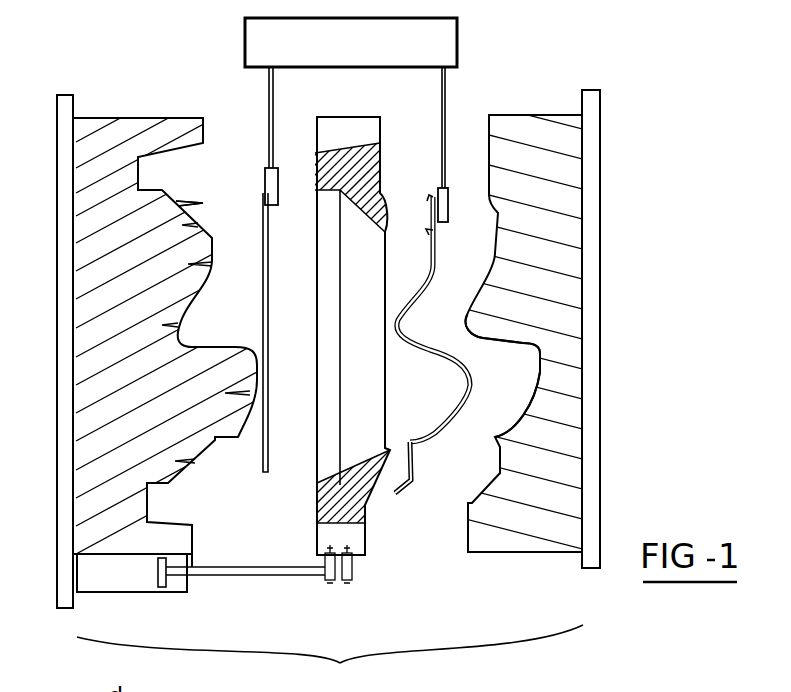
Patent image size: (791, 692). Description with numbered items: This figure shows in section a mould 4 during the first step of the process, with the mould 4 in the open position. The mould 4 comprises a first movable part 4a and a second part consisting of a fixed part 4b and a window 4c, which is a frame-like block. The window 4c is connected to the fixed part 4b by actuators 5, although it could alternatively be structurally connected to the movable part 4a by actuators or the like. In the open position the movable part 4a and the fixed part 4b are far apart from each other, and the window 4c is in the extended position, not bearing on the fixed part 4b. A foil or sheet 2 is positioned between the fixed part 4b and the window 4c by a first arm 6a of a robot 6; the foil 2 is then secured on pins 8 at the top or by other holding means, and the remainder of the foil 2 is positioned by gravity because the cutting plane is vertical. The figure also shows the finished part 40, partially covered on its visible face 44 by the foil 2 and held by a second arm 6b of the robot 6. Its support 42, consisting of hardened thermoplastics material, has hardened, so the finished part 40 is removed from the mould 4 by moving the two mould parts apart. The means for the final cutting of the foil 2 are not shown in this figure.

The foil or sheet 2 is at (262, 293).
The mould 4 is at (330, 658).
The first movable part 4a is at (533, 528).
The fixed part 4b is at (118, 540).
The window 4c is at (365, 518).
The actuators 5 is at (247, 572).
The robot 6 is at (351, 42).
The first arm 6a is at (268, 92).
The second arm 6b is at (447, 88).
The pins 8 is at (187, 201).
The finished part 40 is at (448, 242).
The support 42 is at (452, 408).
The visible face 44 is at (472, 388).